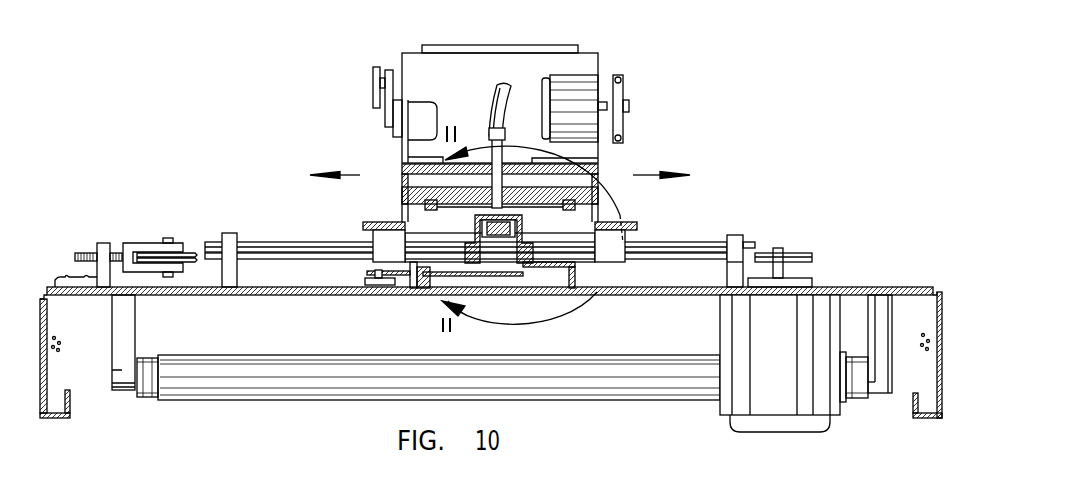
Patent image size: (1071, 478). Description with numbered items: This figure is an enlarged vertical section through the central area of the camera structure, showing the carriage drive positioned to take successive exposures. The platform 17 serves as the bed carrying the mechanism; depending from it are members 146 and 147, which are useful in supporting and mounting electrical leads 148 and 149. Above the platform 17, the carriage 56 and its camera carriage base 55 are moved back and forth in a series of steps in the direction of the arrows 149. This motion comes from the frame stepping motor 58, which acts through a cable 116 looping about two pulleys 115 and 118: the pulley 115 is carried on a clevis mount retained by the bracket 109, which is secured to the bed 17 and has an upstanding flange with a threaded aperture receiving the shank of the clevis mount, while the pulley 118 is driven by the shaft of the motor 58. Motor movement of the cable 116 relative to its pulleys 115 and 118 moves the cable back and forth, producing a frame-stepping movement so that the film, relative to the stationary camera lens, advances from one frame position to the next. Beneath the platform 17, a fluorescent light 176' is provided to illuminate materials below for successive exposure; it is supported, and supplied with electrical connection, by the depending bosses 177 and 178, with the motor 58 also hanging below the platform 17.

The platform 17 is at (943, 338).
The camera carriage base 55 is at (657, 240).
The carriage 56 is at (685, 240).
The frame stepping motor 58 is at (783, 397).
The bracket 109 is at (73, 287).
The pulley 115 is at (195, 247).
The cable 116 is at (268, 257).
The pulley 118 is at (800, 253).
The depending member 146 is at (943, 408).
The depending member 147 is at (70, 418).
The electrical lead 148 is at (44, 390).
The electrical lead / arrows 149 is at (348, 175).
The fluorescent light 176' is at (428, 404).
The depending boss 177 is at (120, 332).
The depending boss 178 is at (875, 343).